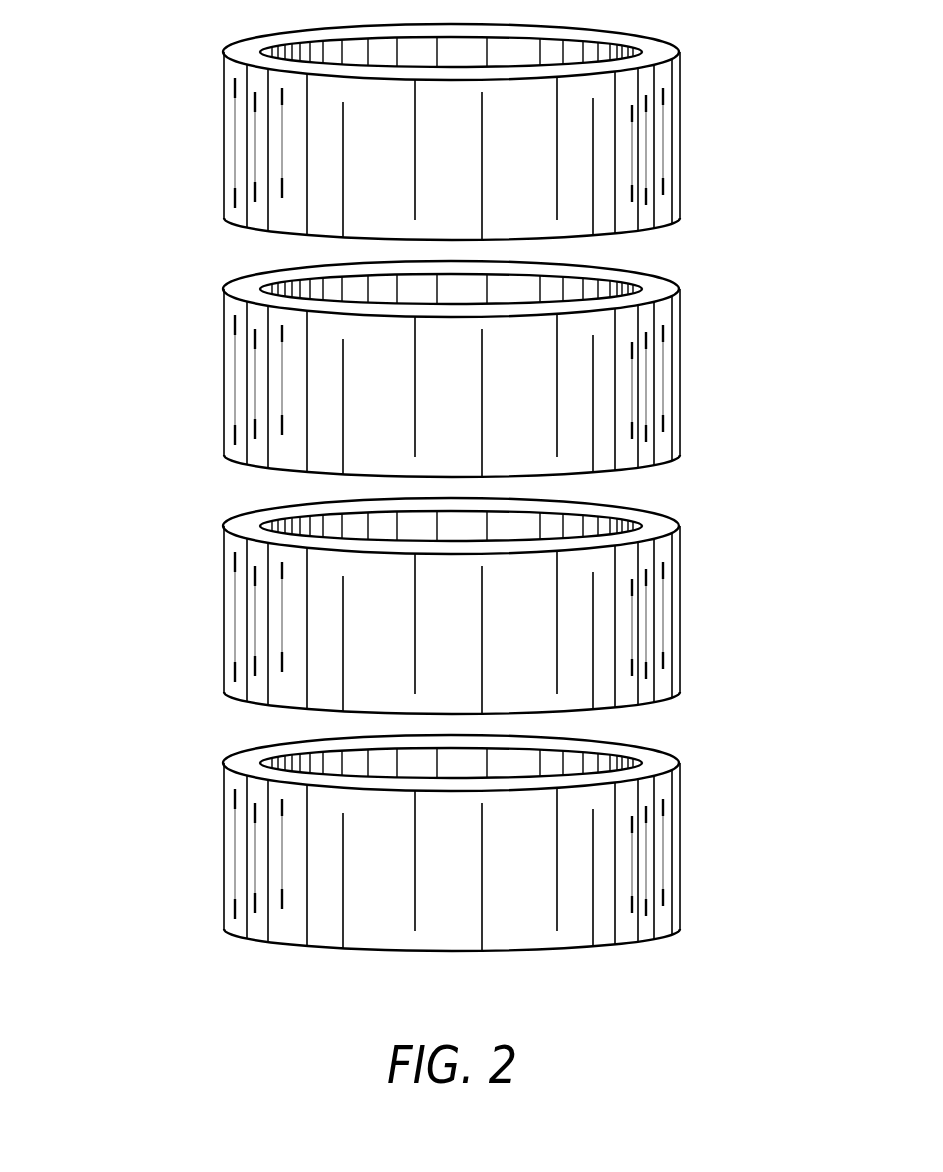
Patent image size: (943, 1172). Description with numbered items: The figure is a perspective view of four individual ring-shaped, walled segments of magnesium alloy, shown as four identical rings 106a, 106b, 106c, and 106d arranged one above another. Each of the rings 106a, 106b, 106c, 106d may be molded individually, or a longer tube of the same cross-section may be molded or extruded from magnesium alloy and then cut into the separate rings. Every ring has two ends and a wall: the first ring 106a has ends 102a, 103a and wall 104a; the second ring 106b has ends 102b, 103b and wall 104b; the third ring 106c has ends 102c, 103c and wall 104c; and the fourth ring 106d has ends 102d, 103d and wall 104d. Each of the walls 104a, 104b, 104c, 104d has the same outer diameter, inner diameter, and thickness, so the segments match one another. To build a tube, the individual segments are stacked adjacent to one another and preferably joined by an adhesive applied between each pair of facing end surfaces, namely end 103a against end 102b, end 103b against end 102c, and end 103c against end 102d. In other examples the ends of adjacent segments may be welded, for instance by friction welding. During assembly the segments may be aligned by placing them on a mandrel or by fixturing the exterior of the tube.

The end 102a is at (246, 41).
The end 102b is at (424, 370).
The end 102c is at (424, 607).
The end 102d is at (424, 844).
The end 103a is at (645, 227).
The end 103b is at (498, 481).
The end 103c is at (498, 718).
The end 103d is at (499, 955).
The wall 104a is at (681, 55).
The wall 104b is at (511, 299).
The wall 104c is at (511, 536).
The wall 104d is at (512, 773).
The ring 106a is at (224, 131).
The ring 106b is at (364, 383).
The ring 106c is at (364, 620).
The ring 106d is at (364, 857).